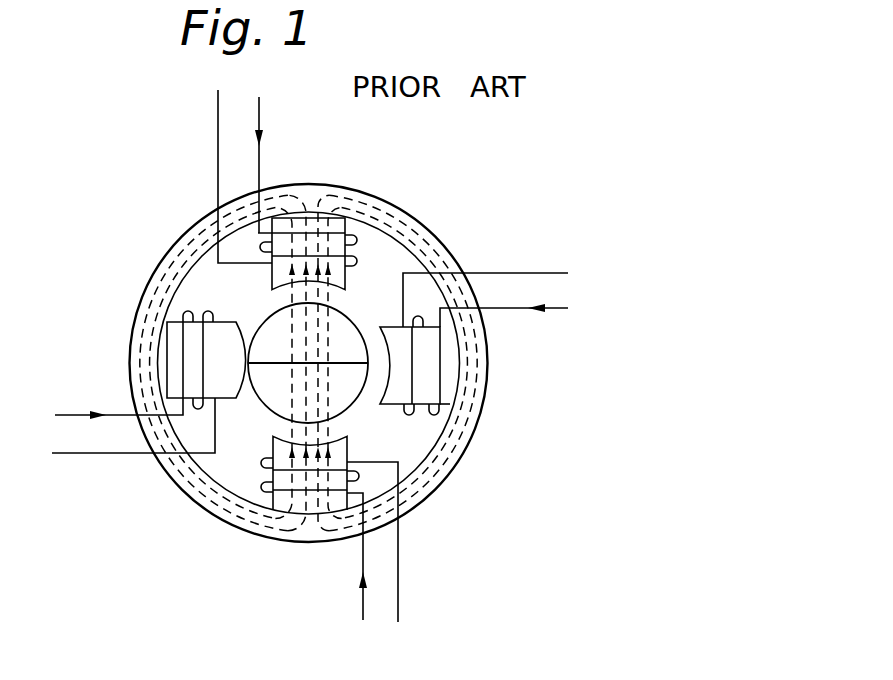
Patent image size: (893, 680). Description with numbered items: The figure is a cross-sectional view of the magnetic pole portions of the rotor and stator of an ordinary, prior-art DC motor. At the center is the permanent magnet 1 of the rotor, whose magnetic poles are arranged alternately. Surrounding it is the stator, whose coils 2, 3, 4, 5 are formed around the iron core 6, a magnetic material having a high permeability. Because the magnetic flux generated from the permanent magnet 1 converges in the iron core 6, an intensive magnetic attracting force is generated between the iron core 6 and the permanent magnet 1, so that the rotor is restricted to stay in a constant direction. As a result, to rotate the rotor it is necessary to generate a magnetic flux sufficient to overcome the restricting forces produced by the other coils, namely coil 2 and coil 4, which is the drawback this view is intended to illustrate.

The permanent magnet 1 is at (270, 318).
The coil 2 is at (440, 375).
The coil 3 is at (297, 497).
The coil 4 is at (183, 351).
The coil 5 is at (290, 197).
The iron core 6 is at (347, 197).